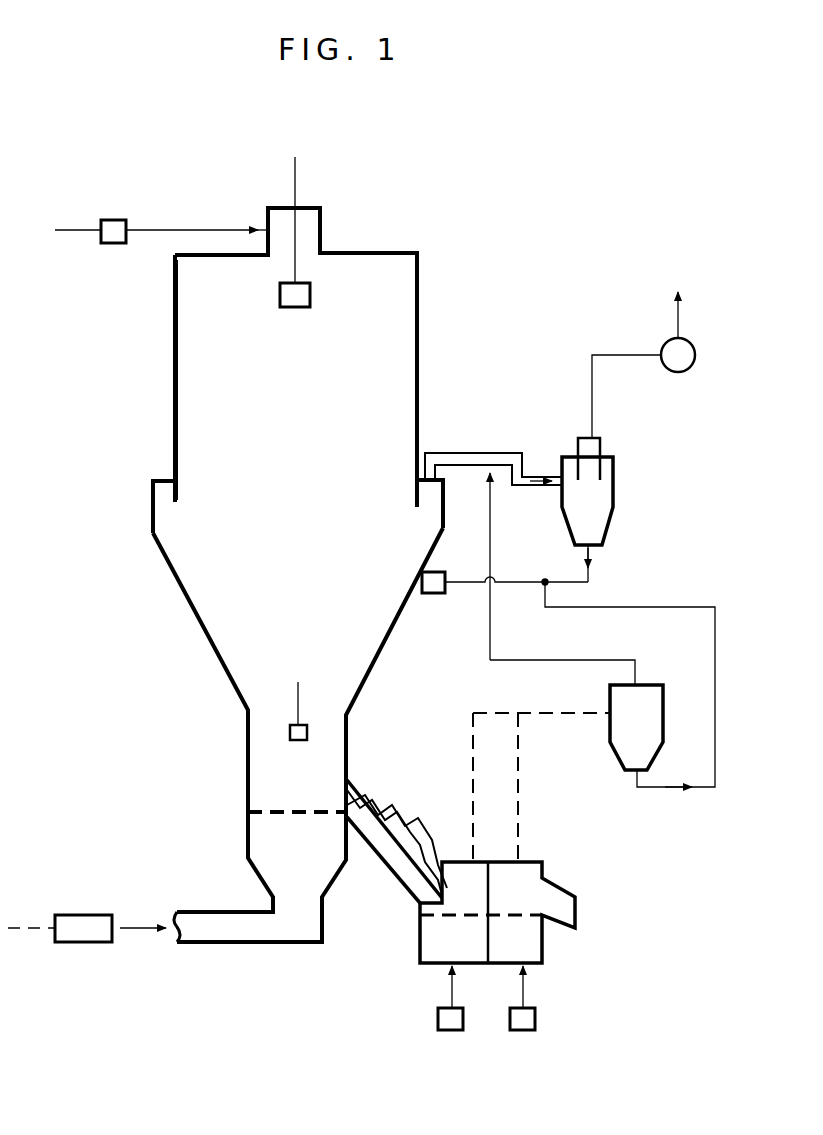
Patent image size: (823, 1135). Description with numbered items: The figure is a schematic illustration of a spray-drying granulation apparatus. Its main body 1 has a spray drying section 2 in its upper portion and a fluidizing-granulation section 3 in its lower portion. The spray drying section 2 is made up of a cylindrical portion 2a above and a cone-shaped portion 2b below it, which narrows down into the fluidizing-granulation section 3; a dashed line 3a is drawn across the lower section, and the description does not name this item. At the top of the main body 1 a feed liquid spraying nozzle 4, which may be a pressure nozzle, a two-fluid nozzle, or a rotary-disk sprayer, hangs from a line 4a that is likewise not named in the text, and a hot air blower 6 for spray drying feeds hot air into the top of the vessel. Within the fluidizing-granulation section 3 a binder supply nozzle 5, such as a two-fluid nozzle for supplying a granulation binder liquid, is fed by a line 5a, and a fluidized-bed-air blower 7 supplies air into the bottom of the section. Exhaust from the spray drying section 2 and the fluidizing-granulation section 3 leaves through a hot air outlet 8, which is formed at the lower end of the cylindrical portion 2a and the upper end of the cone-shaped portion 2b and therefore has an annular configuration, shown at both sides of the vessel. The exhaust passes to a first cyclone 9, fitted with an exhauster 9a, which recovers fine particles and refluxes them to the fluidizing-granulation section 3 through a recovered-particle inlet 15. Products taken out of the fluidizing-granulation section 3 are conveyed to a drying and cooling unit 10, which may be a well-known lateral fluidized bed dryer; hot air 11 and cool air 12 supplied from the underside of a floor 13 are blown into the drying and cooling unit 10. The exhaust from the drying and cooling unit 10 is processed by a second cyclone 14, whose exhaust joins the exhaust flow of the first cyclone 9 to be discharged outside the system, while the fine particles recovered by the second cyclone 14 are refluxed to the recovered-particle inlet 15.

The main body 1 is at (422, 351).
The spray drying section 2 is at (385, 300).
The cylindrical portion 2a is at (176, 405).
The cone-shaped portion 2b is at (176, 580).
The fluidizing-granulation section 3 is at (266, 796).
The perforated plate / bed level 3a is at (328, 818).
The feed liquid spraying nozzle 4 is at (298, 308).
The sensor lead 4a is at (295, 157).
The binder supply nozzle 5 is at (297, 742).
The sensor lead 5a is at (298, 682).
The hot air blower 6 is at (115, 244).
The fluidized-bed-air blower 7 is at (90, 936).
The hot air outlet 8 is at (166, 488).
The first cyclone 9 is at (605, 487).
The exhauster 9a is at (689, 367).
The drying and cooling unit 10 is at (544, 870).
The hot air 11 is at (452, 1028).
The cool air 12 is at (526, 1028).
The floor 13 is at (530, 916).
The second cyclone 14 is at (655, 695).
The recovered-particle inlet 15 is at (436, 596).